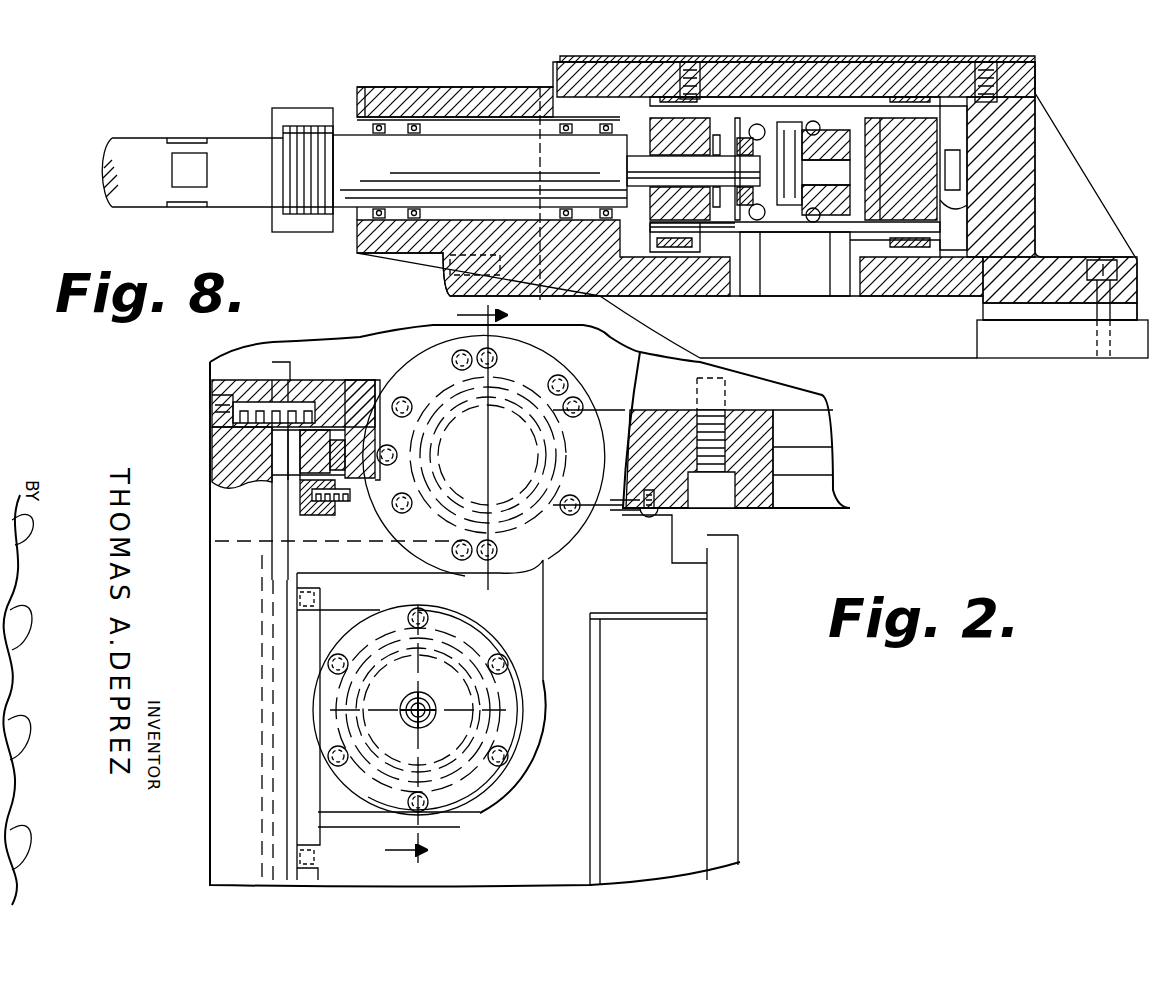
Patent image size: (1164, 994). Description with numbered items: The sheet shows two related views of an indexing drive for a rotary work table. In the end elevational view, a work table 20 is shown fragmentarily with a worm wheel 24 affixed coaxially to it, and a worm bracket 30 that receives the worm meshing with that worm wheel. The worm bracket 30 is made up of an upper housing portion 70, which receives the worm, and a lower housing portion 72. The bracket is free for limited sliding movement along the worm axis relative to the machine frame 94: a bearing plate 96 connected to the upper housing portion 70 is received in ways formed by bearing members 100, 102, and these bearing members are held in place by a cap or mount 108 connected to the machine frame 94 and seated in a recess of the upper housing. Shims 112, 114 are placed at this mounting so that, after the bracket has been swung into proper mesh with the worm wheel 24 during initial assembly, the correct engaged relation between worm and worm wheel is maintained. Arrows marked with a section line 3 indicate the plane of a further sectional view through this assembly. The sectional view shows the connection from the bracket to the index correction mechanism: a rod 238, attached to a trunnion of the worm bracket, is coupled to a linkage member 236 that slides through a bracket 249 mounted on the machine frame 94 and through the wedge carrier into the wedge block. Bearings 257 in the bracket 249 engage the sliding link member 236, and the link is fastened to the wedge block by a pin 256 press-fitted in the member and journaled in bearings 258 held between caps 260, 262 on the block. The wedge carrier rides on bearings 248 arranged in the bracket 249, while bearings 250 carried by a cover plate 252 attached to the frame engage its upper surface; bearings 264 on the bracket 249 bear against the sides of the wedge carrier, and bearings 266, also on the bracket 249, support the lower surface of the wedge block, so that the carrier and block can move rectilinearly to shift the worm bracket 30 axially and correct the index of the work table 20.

In FIG. 2, the section line 3- 3 is at (456, 584).
In FIG. 2, the work table 20 is at (805, 393).
In FIG. 2, the worm wheel 24 is at (757, 508).
In FIG. 2, the worm bracket 30 is at (575, 650).
In FIG. 2, the upper housing portion 70 is at (578, 530).
In FIG. 2, the lower housing portion 72 is at (520, 770).
In FIG. 8, the machine frame 94 is at (1063, 355).
In FIG. 2, the machine frame 94 is at (210, 512).
In FIG. 2, the bearing plate 96 is at (322, 387).
In FIG. 2, the bearing member 100 is at (222, 448).
In FIG. 2, the bearing member 102 is at (215, 472).
In FIG. 2, the cap or mount 108 is at (352, 385).
In FIG. 2, the shim 112 is at (283, 364).
In FIG. 2, the shim 114 is at (332, 508).
In FIG. 8, the linkage member 236 is at (505, 173).
In FIG. 8, the rod 238 is at (154, 126).
In FIG. 8, the bearings 248 is at (680, 240).
In FIG. 8, the bracket 249 is at (378, 95).
In FIG. 8, the bearings 250 is at (688, 95).
In FIG. 8, the cover plate 252 is at (852, 77).
In FIG. 8, the pin 256 is at (795, 128).
In FIG. 8, the bearings 257 is at (420, 110).
In FIG. 8, the bearings 258 is at (835, 130).
In FIG. 8, the cap 260 is at (772, 150).
In FIG. 8, the cap 262 is at (782, 205).
In FIG. 8, the bearings 264 is at (962, 205).
In FIG. 8, the bearings 266 is at (768, 240).